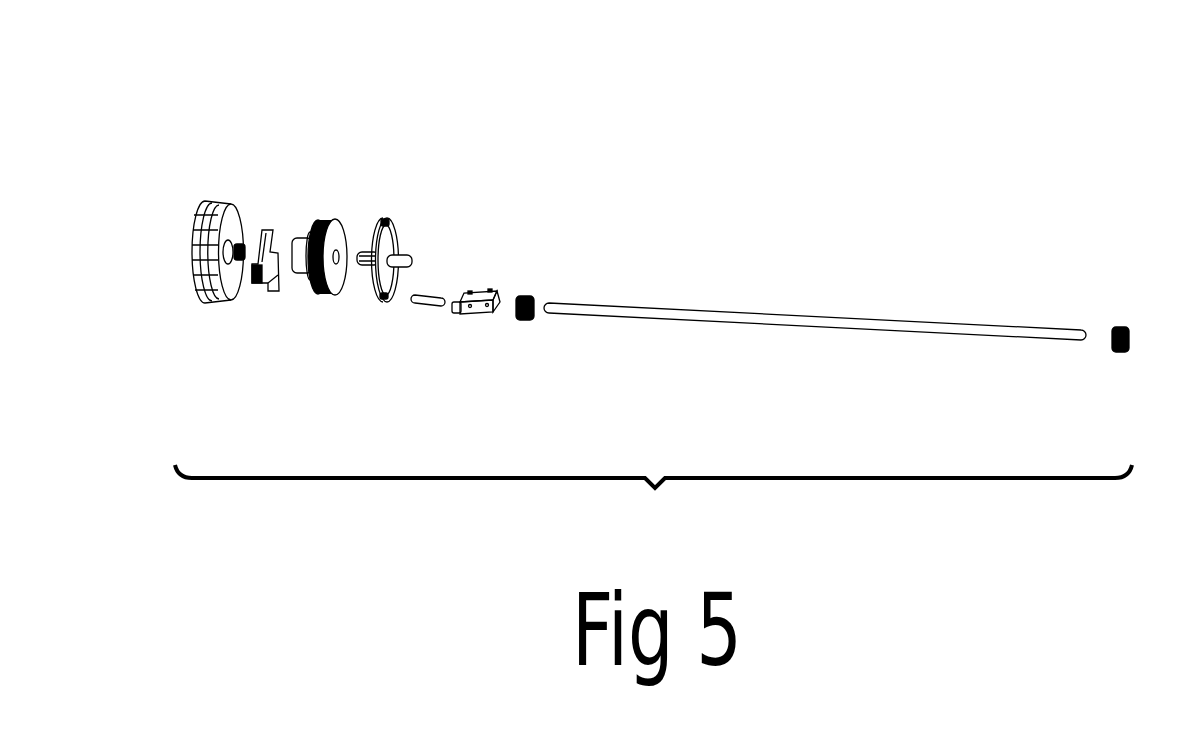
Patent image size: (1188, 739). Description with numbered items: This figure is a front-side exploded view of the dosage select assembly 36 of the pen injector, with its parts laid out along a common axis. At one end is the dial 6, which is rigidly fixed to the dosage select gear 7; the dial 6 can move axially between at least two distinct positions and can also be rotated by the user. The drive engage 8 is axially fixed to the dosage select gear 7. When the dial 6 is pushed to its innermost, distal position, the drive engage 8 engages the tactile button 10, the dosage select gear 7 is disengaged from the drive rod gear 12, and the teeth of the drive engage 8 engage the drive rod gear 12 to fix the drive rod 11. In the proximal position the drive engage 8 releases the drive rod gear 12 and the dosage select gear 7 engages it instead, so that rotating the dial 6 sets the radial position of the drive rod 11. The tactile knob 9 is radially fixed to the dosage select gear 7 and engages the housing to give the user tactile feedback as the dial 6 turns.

The dial 6 is at (217, 194).
The dosage select gear 7 is at (304, 278).
The drive engage 8 is at (265, 224).
The tactile knob 9 is at (386, 218).
The tactile button 10 is at (474, 318).
The drive rod 11 is at (630, 318).
The drive rod gear 12 is at (522, 292).
The dosage select assembly 36 is at (653, 497).